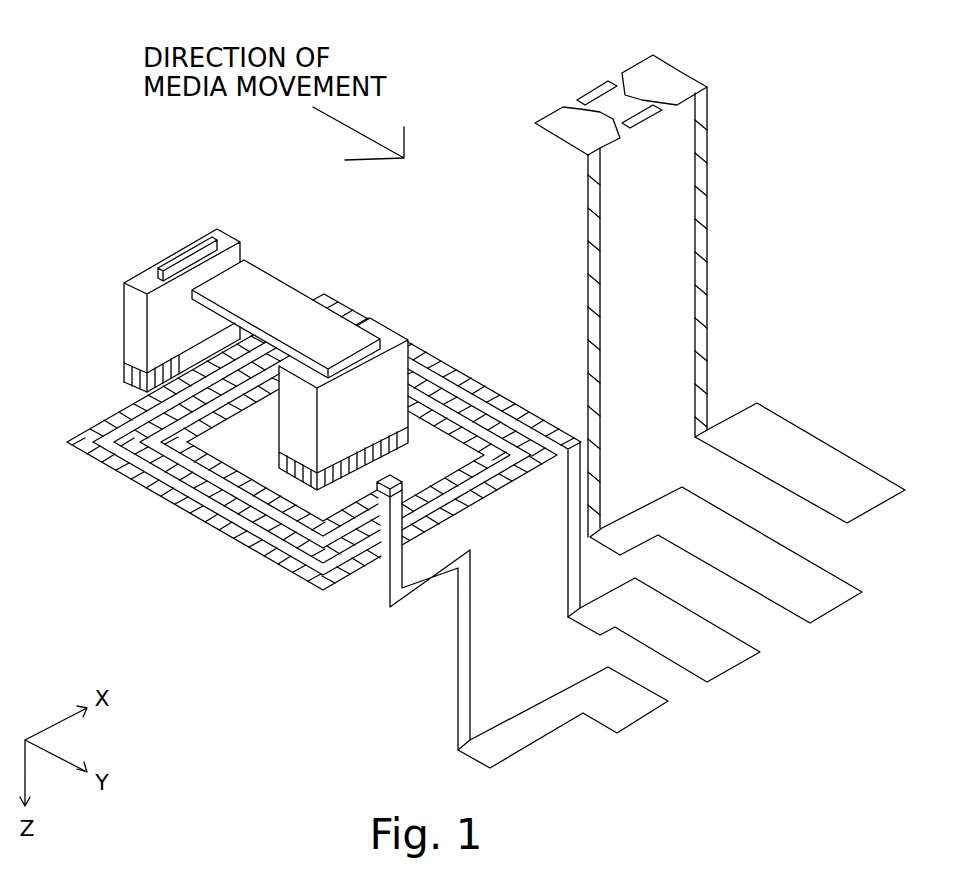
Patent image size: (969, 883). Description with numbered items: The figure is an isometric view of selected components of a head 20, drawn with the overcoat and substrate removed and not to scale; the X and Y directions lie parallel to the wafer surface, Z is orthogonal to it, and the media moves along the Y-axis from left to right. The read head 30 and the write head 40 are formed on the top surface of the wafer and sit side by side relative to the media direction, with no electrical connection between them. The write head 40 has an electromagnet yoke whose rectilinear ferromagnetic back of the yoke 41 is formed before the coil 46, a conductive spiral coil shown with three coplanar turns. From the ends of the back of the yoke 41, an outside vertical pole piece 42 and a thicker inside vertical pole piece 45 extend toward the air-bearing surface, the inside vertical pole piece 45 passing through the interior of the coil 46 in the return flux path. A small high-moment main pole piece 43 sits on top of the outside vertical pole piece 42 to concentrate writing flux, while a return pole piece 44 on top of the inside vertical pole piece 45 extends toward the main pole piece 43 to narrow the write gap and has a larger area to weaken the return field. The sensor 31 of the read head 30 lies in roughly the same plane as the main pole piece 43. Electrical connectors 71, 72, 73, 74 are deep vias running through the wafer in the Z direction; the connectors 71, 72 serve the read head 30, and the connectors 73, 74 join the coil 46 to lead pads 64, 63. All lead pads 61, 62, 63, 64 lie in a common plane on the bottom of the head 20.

The head 20 is at (285, 730).
The read head 30 is at (520, 120).
The sensor 31 is at (625, 98).
The write head 40 is at (378, 277).
The back of the yoke 41 is at (127, 370).
The outside vertical pole piece 42 is at (140, 335).
The main pole piece 43 is at (150, 267).
The return pole piece 44 is at (260, 287).
The inside vertical pole piece 45 is at (379, 432).
The coil 46 is at (220, 523).
The lead pad 61 is at (827, 460).
The lead pad 62 is at (815, 597).
The lead pad 63 is at (725, 653).
The lead pad 64 is at (635, 701).
The electrical connector 71 is at (706, 242).
The electrical connector 72 is at (593, 258).
The electrical connector 73 is at (572, 553).
The electrical connector 74 is at (462, 660).